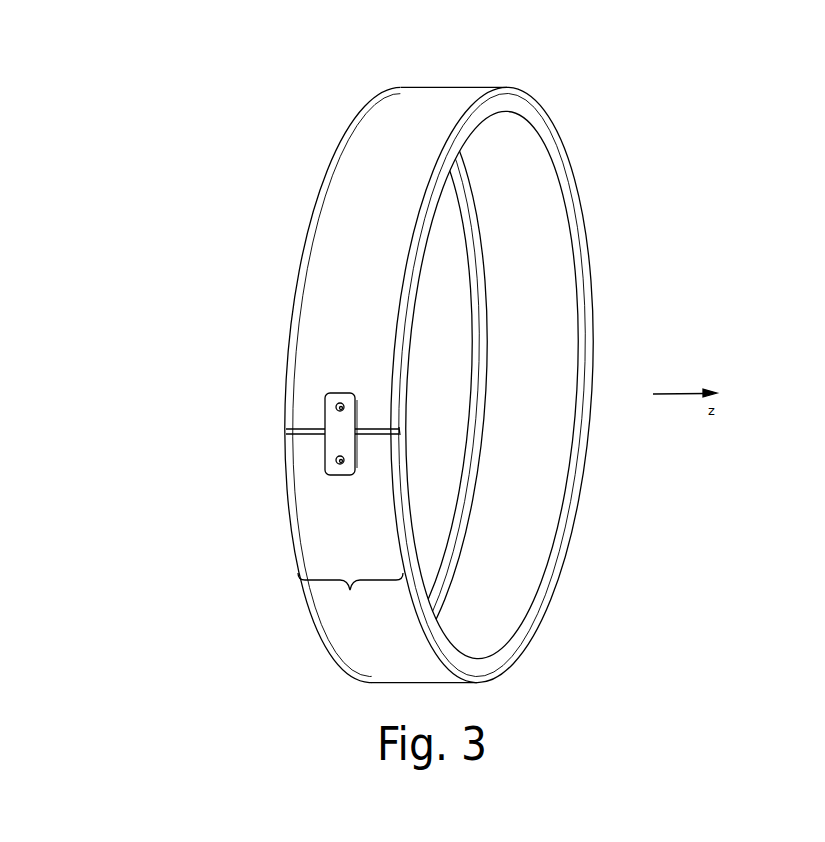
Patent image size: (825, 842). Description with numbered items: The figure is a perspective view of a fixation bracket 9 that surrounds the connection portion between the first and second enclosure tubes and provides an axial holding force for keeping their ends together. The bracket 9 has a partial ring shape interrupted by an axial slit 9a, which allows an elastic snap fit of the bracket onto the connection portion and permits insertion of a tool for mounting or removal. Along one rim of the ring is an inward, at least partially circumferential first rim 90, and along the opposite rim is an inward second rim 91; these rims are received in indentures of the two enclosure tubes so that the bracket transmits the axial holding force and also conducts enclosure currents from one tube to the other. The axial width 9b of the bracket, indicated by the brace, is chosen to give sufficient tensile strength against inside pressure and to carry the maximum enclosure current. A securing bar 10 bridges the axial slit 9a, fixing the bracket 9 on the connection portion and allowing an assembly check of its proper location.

The fixation bracket 9 is at (455, 369).
The first rim 90 is at (478, 337).
The second rim 91 is at (583, 330).
The axial slit 9a is at (283, 428).
The axial width 9b is at (345, 590).
The securing bar 10 is at (327, 395).